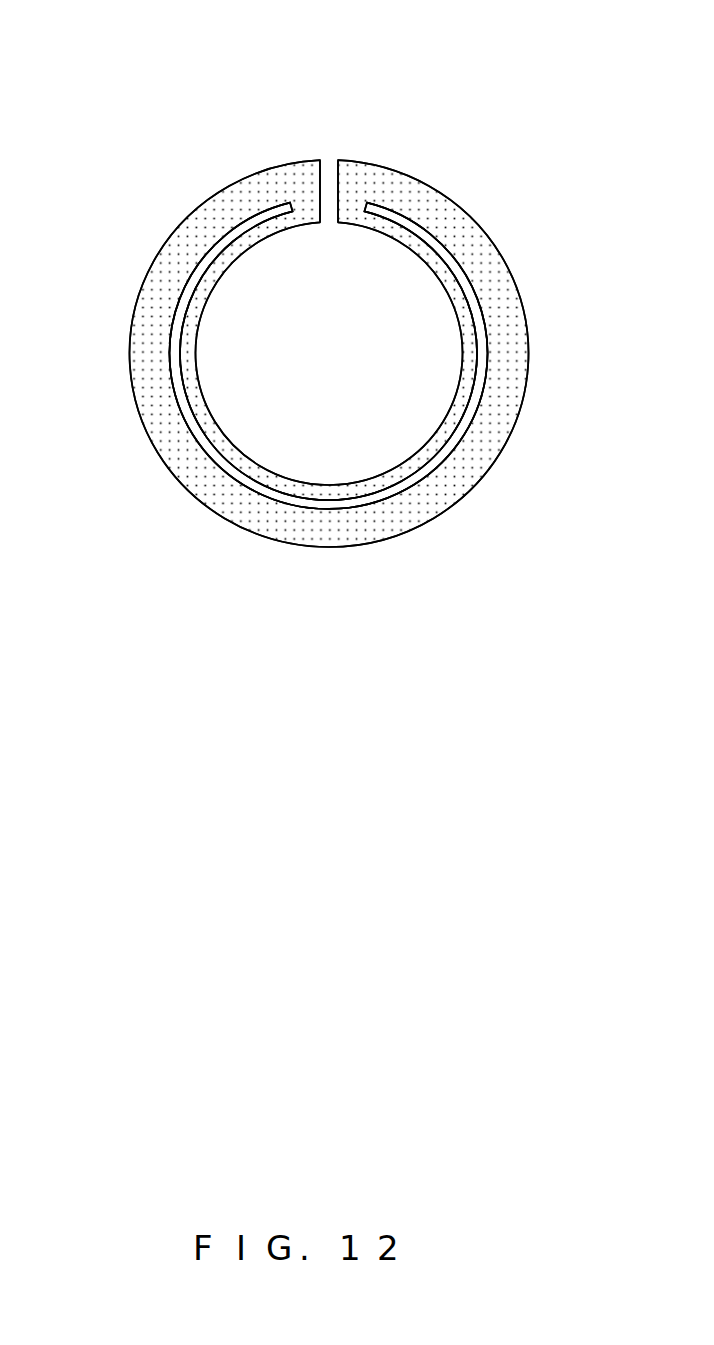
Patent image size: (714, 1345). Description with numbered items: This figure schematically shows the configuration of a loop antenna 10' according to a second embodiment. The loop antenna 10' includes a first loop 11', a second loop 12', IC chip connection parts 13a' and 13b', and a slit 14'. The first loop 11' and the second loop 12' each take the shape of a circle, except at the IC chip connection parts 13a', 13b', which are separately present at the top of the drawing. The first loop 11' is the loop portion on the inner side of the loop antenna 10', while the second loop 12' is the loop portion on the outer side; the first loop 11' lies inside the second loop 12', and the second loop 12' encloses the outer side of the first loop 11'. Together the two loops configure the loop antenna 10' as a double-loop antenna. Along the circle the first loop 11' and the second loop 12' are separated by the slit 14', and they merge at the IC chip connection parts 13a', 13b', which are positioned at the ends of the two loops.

The loop antenna 10' is at (338, 282).
The first loop 11' is at (332, 423).
The second loop 12' is at (313, 399).
The IC chip connection part 13a' is at (368, 145).
The IC chip connection part 13b' is at (286, 145).
The slit 14' is at (260, 356).